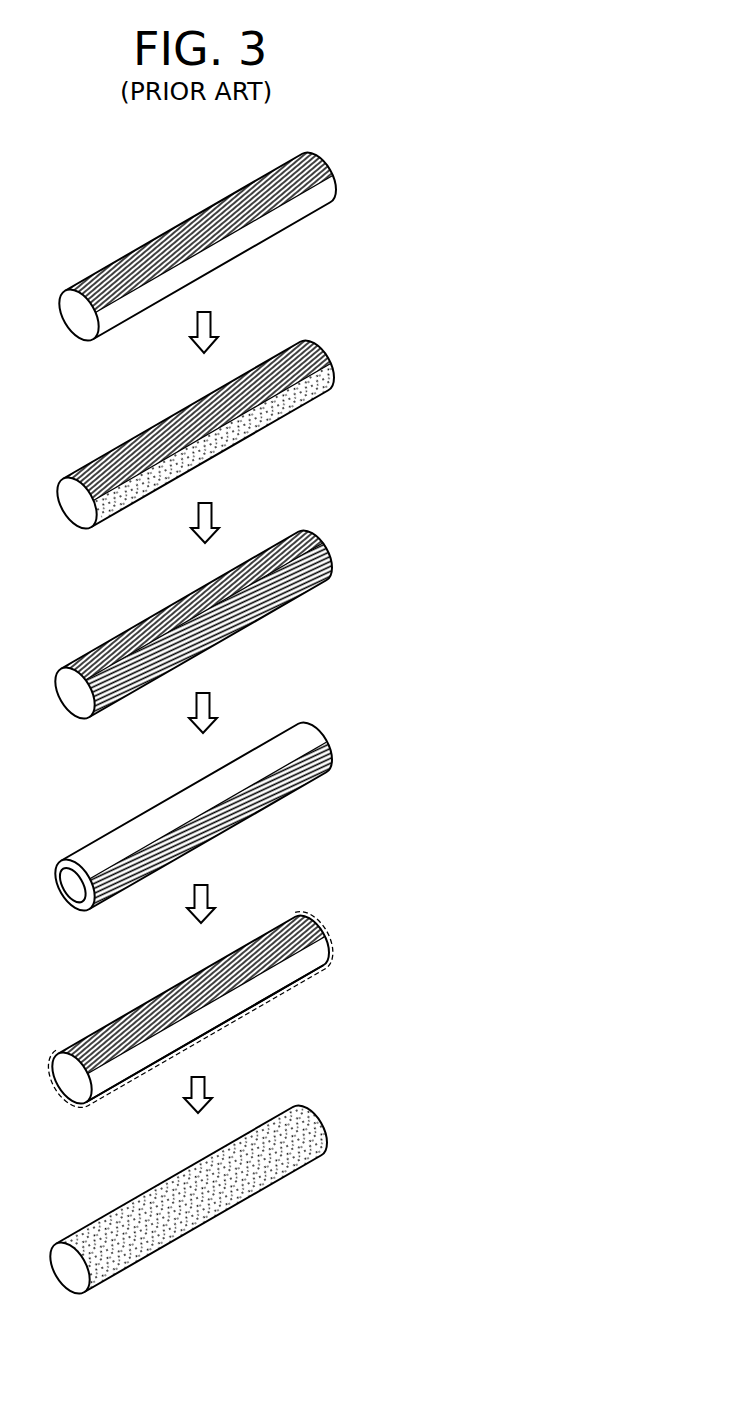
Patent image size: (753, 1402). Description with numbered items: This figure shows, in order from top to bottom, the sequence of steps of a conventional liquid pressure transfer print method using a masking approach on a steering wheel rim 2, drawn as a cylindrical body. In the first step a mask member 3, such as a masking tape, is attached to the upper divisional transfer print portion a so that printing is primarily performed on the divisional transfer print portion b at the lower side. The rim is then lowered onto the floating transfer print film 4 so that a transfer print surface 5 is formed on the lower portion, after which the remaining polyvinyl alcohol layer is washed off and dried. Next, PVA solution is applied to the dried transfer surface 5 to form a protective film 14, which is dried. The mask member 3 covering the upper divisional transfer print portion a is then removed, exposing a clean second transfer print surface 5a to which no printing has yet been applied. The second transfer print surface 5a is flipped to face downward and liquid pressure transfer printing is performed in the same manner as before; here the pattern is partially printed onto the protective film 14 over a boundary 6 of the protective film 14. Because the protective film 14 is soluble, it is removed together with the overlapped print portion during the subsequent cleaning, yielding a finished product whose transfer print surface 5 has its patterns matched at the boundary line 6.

The steering wheel rim 2 is at (357, 177).
The mask member 3 is at (212, 210).
The upper divisional transfer print portion a is at (100, 260).
The divisional transfer print portion at the lower side b is at (117, 310).
The transfer print surface 5 is at (137, 493).
The protective film 14 is at (267, 610).
The second transfer print surface 5a is at (138, 830).
The transfer print film 4 is at (327, 950).
The boundary of the protective film 6 is at (140, 1040).